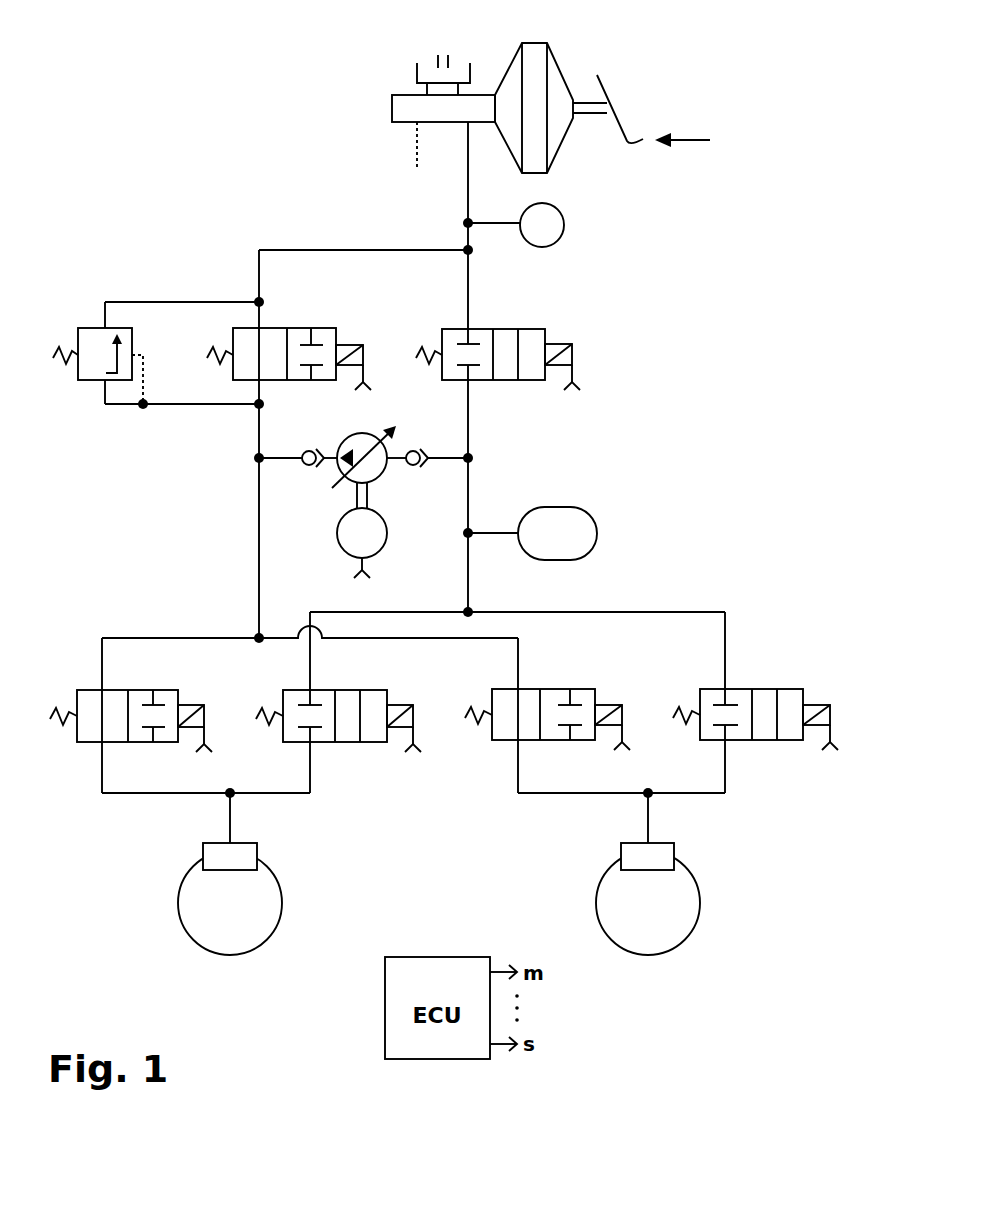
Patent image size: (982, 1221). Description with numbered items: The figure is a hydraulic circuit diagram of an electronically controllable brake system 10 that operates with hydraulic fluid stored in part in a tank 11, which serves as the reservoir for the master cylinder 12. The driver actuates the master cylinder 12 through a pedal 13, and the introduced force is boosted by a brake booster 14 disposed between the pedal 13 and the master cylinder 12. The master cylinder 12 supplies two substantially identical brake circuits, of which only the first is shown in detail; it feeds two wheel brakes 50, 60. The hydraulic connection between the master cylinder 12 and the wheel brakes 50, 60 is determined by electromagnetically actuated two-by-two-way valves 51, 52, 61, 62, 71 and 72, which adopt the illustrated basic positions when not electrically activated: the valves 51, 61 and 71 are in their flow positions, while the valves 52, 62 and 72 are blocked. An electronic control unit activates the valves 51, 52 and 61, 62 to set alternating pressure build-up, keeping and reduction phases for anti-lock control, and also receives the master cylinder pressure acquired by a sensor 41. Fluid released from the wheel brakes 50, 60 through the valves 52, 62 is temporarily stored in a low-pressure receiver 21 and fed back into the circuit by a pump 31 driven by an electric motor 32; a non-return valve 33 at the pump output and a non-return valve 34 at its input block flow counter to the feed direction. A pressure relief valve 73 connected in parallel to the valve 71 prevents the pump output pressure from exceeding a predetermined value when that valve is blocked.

The brake system 10 is at (208, 104).
The tank 11 is at (425, 63).
The master cylinder 12 is at (397, 100).
The pedal 13 is at (621, 125).
The brake booster 14 is at (530, 50).
The low-pressure receiver 21 is at (575, 523).
The pump 31 is at (365, 440).
The electric motor 32 is at (373, 517).
The non-return valve 33 is at (305, 452).
The non-return valve 34 is at (410, 452).
The sensor 41 is at (556, 224).
The wheel brake 50 is at (247, 852).
The 2/2-way valve 51 is at (168, 698).
The 2/2-way valve 52 is at (377, 698).
The wheel brake 60 is at (663, 852).
The 2/2-way valve 61 is at (585, 698).
The 2/2-way valve 62 is at (792, 698).
The 2/2-way valve 71 is at (327, 338).
The 2/2-way valve 72 is at (535, 337).
The pressure relief valve 73 is at (90, 338).